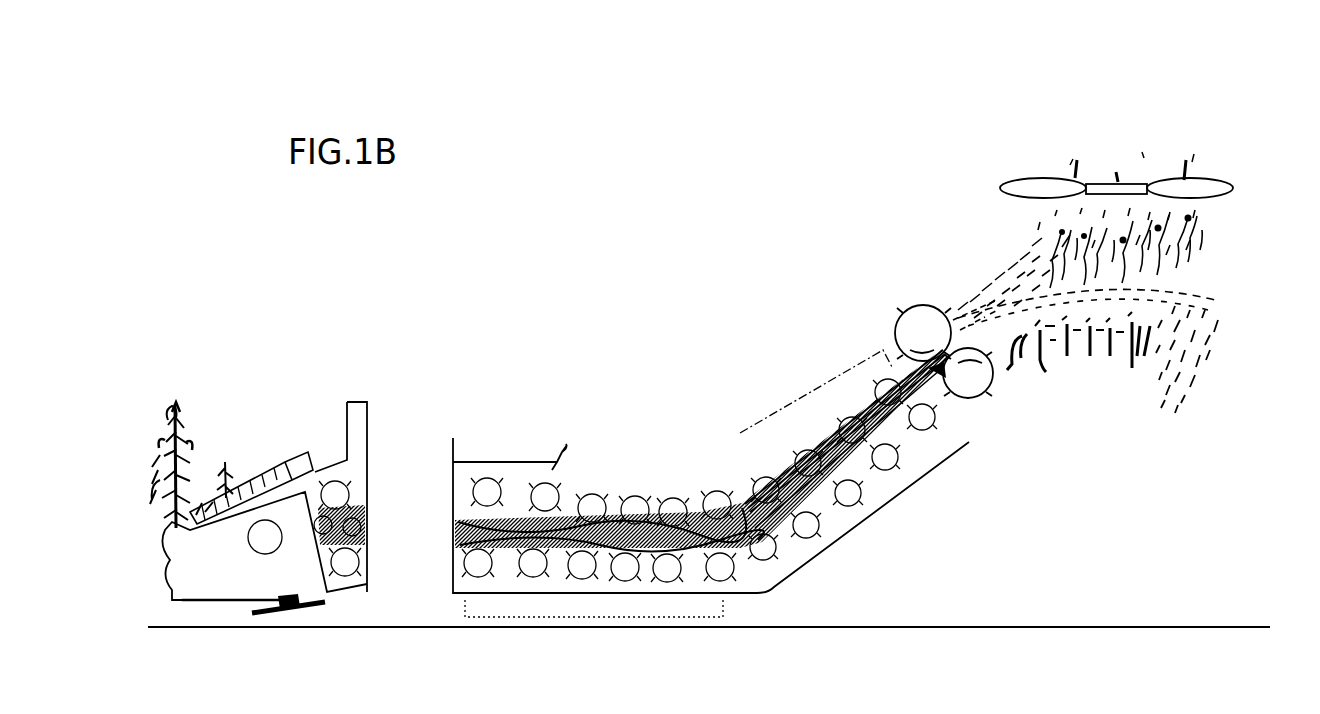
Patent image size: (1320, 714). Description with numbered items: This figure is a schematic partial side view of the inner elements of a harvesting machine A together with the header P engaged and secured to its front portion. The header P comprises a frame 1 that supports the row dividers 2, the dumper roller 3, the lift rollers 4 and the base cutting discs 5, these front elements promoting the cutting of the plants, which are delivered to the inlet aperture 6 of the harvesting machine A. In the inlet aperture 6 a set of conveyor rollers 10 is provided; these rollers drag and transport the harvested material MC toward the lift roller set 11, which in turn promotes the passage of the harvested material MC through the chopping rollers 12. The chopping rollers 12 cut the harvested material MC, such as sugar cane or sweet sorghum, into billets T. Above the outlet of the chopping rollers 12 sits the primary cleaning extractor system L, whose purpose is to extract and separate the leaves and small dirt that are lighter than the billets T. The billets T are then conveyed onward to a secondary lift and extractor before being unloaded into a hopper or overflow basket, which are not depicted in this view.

The header P is at (276, 304).
The frame 1 is at (215, 573).
The row dividers 2 is at (255, 475).
The dumper roller 3 is at (262, 548).
The lift rollers 4 is at (330, 483).
The base cutting discs 5 is at (313, 597).
The inlet aperture 6 is at (453, 505).
The harvesting machine A is at (604, 328).
The conveyor rollers 10 is at (595, 617).
The lift roller set 11 is at (782, 407).
The chopping rollers 12 is at (923, 333).
The harvested material MC is at (652, 497).
The primary cleaning extractor system L is at (1205, 122).
The billets T is at (1180, 387).